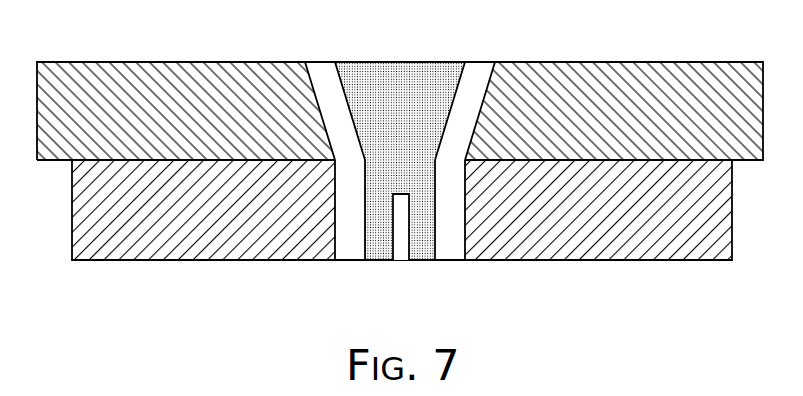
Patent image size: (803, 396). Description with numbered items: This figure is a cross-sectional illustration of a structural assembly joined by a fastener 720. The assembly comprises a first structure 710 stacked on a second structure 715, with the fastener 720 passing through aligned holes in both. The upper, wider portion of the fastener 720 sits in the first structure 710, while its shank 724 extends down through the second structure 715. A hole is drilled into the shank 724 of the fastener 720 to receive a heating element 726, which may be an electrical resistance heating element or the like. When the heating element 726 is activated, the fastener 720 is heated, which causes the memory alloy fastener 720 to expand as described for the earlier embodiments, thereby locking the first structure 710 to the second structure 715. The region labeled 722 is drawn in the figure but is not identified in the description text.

The first structure 710 is at (201, 119).
The second structure 715 is at (218, 218).
The fastener 720 is at (393, 62).
The upper conductive fill 722 is at (415, 118).
The shank 724 is at (417, 185).
The heating element 726 is at (418, 276).